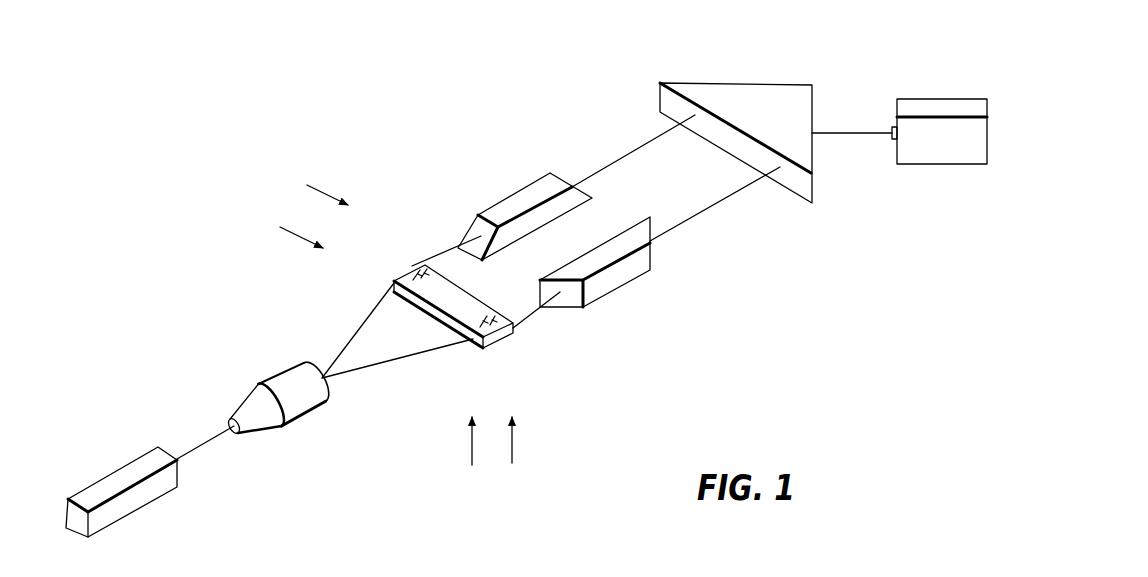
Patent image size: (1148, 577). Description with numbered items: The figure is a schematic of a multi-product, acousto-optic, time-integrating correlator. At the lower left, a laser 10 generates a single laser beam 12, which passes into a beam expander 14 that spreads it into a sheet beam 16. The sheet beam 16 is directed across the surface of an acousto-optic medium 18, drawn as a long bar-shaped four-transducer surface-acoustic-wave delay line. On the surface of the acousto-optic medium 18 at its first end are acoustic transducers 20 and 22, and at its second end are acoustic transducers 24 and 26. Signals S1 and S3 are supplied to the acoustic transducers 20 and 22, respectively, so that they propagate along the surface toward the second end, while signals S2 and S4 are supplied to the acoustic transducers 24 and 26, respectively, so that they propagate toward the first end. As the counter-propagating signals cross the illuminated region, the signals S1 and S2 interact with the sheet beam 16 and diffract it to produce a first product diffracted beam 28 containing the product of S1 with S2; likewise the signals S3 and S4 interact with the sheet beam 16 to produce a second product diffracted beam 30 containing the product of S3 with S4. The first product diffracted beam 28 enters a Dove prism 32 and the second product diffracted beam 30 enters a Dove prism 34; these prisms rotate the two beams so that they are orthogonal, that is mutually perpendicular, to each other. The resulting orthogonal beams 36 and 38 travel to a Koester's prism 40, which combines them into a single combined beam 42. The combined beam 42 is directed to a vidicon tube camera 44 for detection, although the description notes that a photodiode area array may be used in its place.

The laser 10 is at (112, 478).
The laser beam 12 is at (207, 438).
The beam expander 14 is at (293, 413).
The sheet beam 16 is at (338, 348).
The acousto-optic medium 18 is at (393, 282).
The acoustic transducer 20 is at (410, 272).
The acoustic transducer 22 is at (421, 266).
The acoustic transducer 24 is at (477, 336).
The acoustic transducer 26 is at (493, 324).
The first product diffracted beam 28 is at (453, 252).
The second product diffracted beam 30 is at (531, 316).
The Dove prism 32 is at (512, 202).
The Dove prism 34 is at (612, 283).
The orthogonal beam 36 is at (610, 163).
The orthogonal beam 38 is at (697, 218).
The Koester's prism 40 is at (800, 90).
The combined beam 42 is at (855, 134).
The vidicon tube camera 44 is at (923, 103).
The signal S1 is at (289, 234).
The signal S2 is at (473, 456).
The signal S3 is at (315, 187).
The signal S4 is at (516, 456).